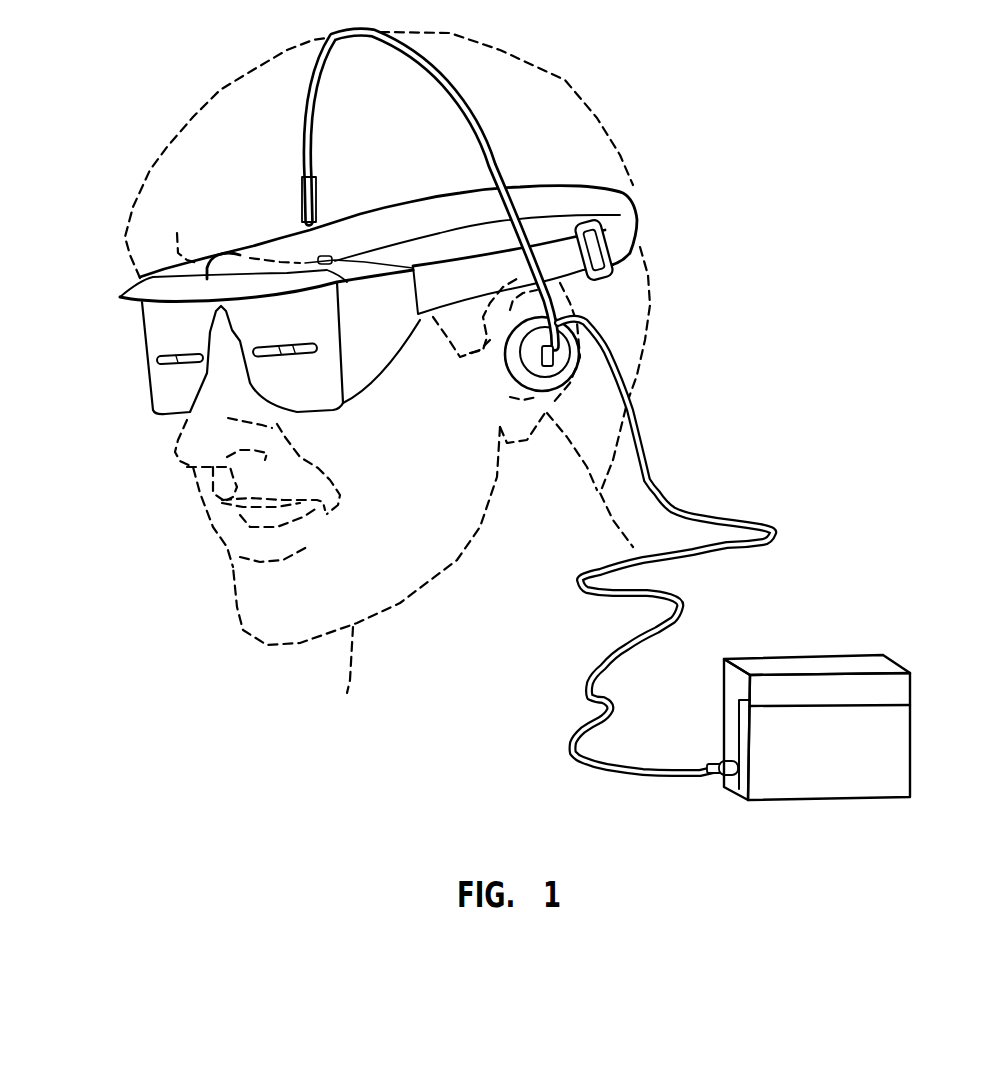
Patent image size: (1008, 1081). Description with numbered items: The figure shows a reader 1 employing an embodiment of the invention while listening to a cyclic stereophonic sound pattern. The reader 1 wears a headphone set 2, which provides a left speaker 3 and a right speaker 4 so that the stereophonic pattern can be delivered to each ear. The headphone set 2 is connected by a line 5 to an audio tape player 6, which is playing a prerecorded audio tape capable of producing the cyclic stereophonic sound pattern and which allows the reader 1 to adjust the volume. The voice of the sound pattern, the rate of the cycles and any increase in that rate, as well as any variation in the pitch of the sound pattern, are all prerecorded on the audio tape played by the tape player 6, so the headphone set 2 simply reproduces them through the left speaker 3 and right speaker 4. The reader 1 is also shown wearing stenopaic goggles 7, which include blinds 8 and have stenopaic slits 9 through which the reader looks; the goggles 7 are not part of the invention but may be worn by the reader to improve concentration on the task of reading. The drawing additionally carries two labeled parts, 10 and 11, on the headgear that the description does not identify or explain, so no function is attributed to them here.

The reader 1 is at (479, 410).
The headphone set 2 is at (457, 88).
The left speaker 3 is at (553, 373).
The right speaker 4 is at (340, 257).
The line 5 is at (717, 517).
The audio tape player 6 is at (800, 657).
The stenopaic goggles 7 is at (234, 367).
The blinds 8 is at (175, 314).
The stenopaic slits 9 is at (153, 367).
The headband 10 is at (577, 200).
The buckle 11 is at (610, 270).